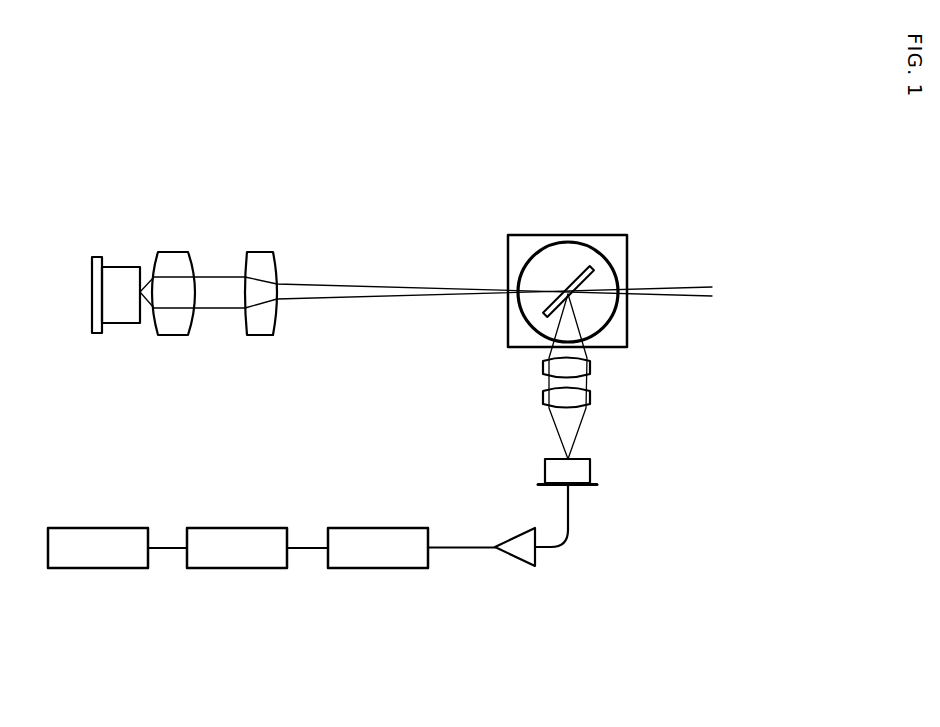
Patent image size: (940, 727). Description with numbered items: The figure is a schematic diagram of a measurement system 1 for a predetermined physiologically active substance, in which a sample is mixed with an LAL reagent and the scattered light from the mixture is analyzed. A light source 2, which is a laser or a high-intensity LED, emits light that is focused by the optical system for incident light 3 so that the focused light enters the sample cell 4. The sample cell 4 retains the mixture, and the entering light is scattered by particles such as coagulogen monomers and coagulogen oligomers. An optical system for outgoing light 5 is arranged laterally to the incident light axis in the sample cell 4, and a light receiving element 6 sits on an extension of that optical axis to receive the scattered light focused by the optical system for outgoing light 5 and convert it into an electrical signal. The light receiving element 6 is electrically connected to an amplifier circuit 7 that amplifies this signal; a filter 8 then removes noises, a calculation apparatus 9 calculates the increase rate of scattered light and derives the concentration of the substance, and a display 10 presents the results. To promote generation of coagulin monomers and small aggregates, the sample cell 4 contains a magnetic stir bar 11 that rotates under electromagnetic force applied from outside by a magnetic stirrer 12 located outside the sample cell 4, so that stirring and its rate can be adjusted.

The measurement system 1 is at (618, 525).
The light source 2 is at (118, 323).
The optical system for incident light 3 is at (278, 348).
The sample cell 4 is at (527, 323).
The optical system for outgoing light 5 is at (527, 347).
The light receiving element 6 is at (240, 568).
The amplifier circuit 7 is at (518, 560).
The filter 8 is at (382, 568).
The calculation apparatus 9 is at (591, 469).
The display 10 is at (107, 568).
The magnetic stir bar 11 is at (567, 282).
The magnetic stirrer 12 is at (557, 235).